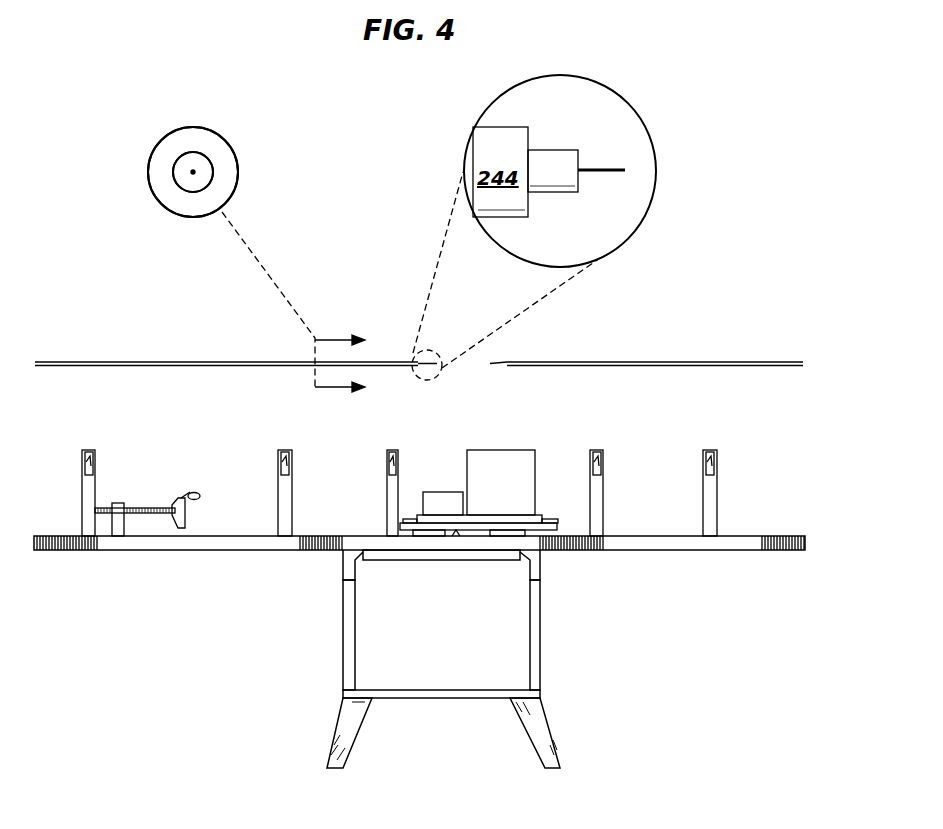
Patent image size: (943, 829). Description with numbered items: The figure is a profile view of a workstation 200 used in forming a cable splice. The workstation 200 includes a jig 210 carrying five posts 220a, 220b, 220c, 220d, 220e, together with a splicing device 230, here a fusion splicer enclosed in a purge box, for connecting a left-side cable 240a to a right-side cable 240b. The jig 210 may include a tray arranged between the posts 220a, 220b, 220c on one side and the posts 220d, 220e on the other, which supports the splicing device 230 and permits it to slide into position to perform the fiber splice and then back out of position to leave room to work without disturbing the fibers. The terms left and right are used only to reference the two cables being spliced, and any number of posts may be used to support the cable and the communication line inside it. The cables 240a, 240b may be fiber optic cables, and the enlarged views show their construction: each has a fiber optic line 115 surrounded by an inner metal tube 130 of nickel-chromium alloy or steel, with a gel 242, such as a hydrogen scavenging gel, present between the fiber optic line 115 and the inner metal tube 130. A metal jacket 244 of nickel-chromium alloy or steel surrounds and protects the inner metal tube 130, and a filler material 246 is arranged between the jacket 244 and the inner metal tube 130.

The fiber optic line 115 is at (192, 175).
The inner metal tube 130 is at (212, 177).
The workstation 200 is at (263, 612).
The jig 210 is at (768, 536).
The post 220a is at (85, 450).
The post 220b is at (283, 450).
The post 220c is at (397, 450).
The post 220d is at (594, 450).
The post 220e is at (713, 450).
The splicing device 230 is at (479, 493).
The left-side cable 240a is at (118, 360).
The right-side cable 240b is at (725, 360).
The gel 242 is at (180, 170).
The metal jacket 244 is at (160, 138).
The filler material 246 is at (217, 145).